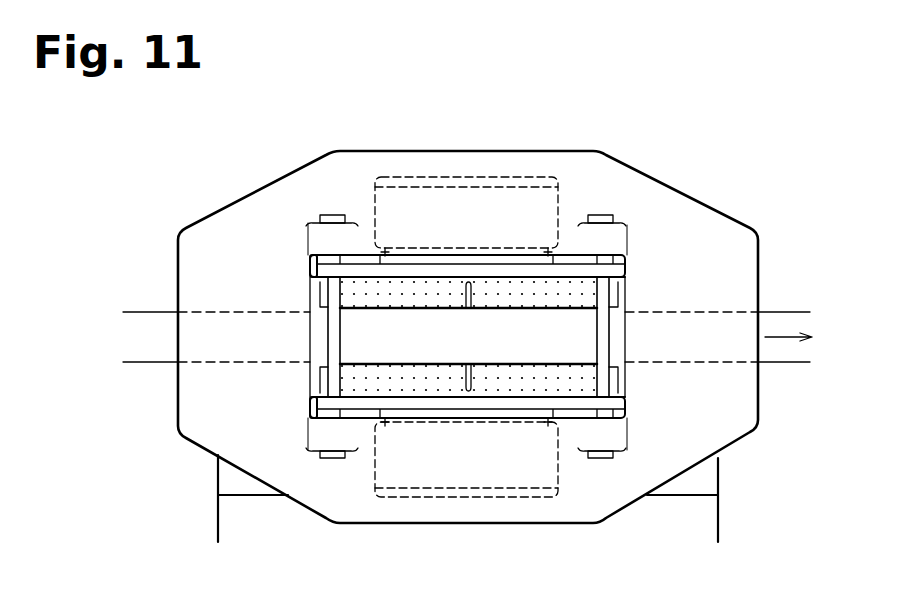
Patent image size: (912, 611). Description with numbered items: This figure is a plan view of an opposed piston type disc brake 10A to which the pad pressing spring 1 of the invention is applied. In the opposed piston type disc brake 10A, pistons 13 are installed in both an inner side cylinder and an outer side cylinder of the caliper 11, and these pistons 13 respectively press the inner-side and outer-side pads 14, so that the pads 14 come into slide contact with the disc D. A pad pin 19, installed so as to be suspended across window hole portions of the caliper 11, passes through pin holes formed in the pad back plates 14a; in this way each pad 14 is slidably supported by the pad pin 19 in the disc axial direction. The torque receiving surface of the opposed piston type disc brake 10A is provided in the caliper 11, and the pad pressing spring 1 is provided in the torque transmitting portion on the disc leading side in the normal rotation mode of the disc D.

The opposed piston type disc brake 10A is at (650, 163).
The caliper 11 is at (597, 490).
The piston 13 is at (502, 208).
The pad 14 is at (368, 256).
The pad back plate 14a is at (415, 270).
The pad pressing spring 1 is at (308, 266).
The pad pin 19 is at (332, 335).
The disc D is at (805, 300).